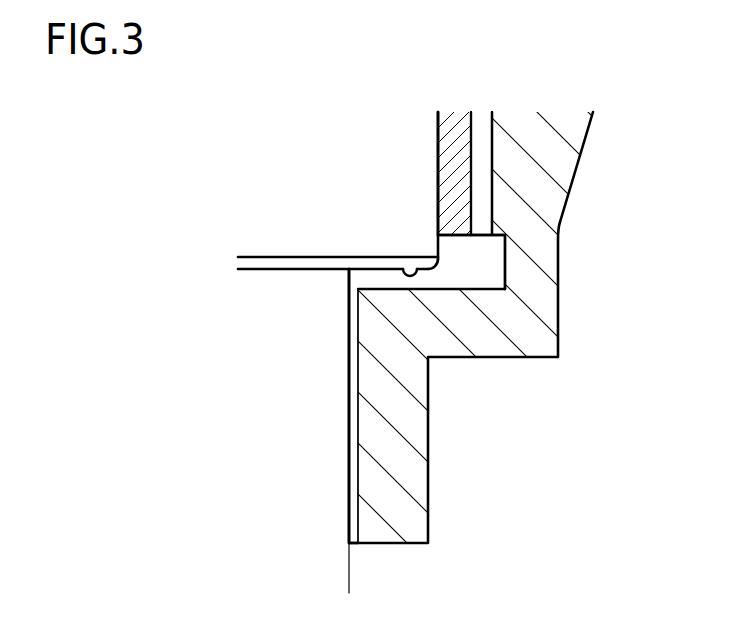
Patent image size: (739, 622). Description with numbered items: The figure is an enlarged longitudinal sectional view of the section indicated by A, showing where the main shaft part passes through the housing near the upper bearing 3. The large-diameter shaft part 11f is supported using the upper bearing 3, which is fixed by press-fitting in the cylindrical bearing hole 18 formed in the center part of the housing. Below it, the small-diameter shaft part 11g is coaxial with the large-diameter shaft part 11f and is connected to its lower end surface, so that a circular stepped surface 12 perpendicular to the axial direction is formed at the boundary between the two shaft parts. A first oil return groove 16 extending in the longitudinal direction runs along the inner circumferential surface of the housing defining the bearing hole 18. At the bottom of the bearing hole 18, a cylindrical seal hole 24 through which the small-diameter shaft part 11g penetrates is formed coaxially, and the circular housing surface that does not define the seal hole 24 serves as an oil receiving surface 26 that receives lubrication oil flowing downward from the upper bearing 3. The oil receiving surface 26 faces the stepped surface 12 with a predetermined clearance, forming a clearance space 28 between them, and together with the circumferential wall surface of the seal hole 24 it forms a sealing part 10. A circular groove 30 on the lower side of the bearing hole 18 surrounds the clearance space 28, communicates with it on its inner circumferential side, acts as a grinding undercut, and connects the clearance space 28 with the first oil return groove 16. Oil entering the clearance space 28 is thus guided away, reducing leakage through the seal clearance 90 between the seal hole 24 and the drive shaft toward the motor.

The upper bearing 3 is at (446, 167).
The sealing part 10 is at (636, 368).
The large-diameter shaft part 11f is at (439, 134).
The small-diameter shaft part 11g is at (350, 573).
The stepped surface 12 is at (403, 258).
The first oil return groove 16 is at (478, 167).
The bearing hole 18 is at (466, 121).
The seal hole 24 is at (358, 416).
The oil receiving surface 26 is at (423, 289).
The clearance space 28 is at (361, 282).
The circular groove 30 is at (487, 255).
The seal clearance 90 is at (350, 440).
The section A is at (232, 192).